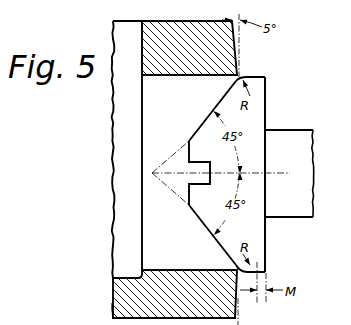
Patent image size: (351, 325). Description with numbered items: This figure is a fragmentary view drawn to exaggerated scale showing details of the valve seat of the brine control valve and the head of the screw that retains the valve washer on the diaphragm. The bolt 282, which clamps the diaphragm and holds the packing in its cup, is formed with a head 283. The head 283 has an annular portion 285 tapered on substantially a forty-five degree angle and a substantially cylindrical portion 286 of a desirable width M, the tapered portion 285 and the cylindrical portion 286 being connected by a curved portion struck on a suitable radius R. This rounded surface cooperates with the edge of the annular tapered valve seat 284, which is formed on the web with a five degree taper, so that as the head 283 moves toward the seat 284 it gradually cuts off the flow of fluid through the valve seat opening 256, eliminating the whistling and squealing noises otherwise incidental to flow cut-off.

The valve seat opening 256 is at (153, 117).
The bolt 282 is at (290, 137).
The head 283 is at (206, 128).
The annular tapered seat 284 is at (238, 311).
The annular portion 285 is at (202, 216).
The cylindrical portion 286 is at (266, 246).